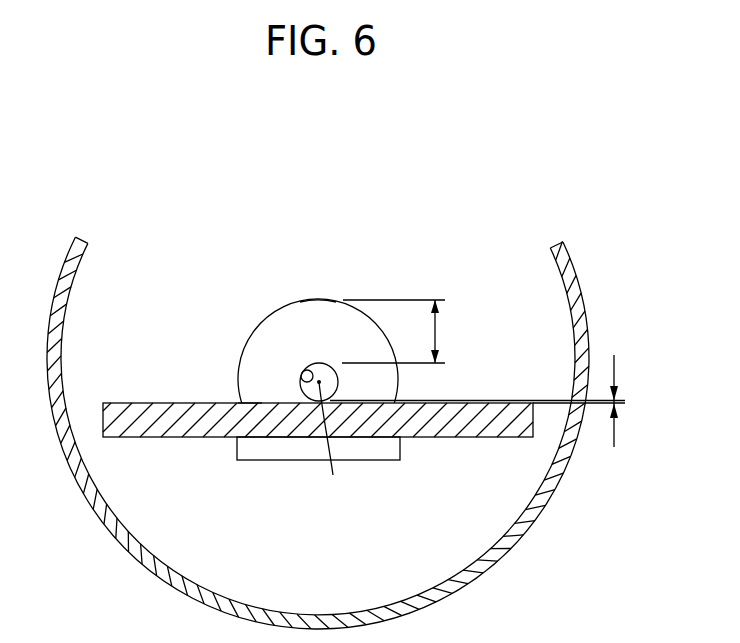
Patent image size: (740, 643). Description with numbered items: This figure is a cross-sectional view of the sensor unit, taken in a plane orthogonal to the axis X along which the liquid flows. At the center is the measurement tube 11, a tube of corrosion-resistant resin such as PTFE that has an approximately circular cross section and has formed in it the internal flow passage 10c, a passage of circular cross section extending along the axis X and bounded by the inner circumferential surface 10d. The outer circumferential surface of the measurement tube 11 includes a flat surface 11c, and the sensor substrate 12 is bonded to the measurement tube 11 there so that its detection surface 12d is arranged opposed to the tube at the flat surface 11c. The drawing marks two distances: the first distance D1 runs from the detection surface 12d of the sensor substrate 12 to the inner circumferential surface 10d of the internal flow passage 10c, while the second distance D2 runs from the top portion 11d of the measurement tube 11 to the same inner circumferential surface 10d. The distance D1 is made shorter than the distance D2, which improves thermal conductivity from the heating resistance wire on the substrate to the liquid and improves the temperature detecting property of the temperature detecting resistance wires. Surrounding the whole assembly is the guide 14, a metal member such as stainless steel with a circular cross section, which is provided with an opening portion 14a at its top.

The guide 14 is at (507, 550).
The opening portion 14a is at (547, 200).
The sensor substrate 12 is at (462, 437).
The detection surface 12d is at (259, 403).
The measurement tube 11 is at (264, 322).
The flat surface 11c is at (266, 404).
The top portion 11d is at (331, 294).
The inner circumferential surface 10d is at (300, 377).
The internal flow passage 10c is at (312, 365).
The axis X is at (331, 443).
The first distance D1 is at (492, 401).
The second distance D2 is at (406, 331).